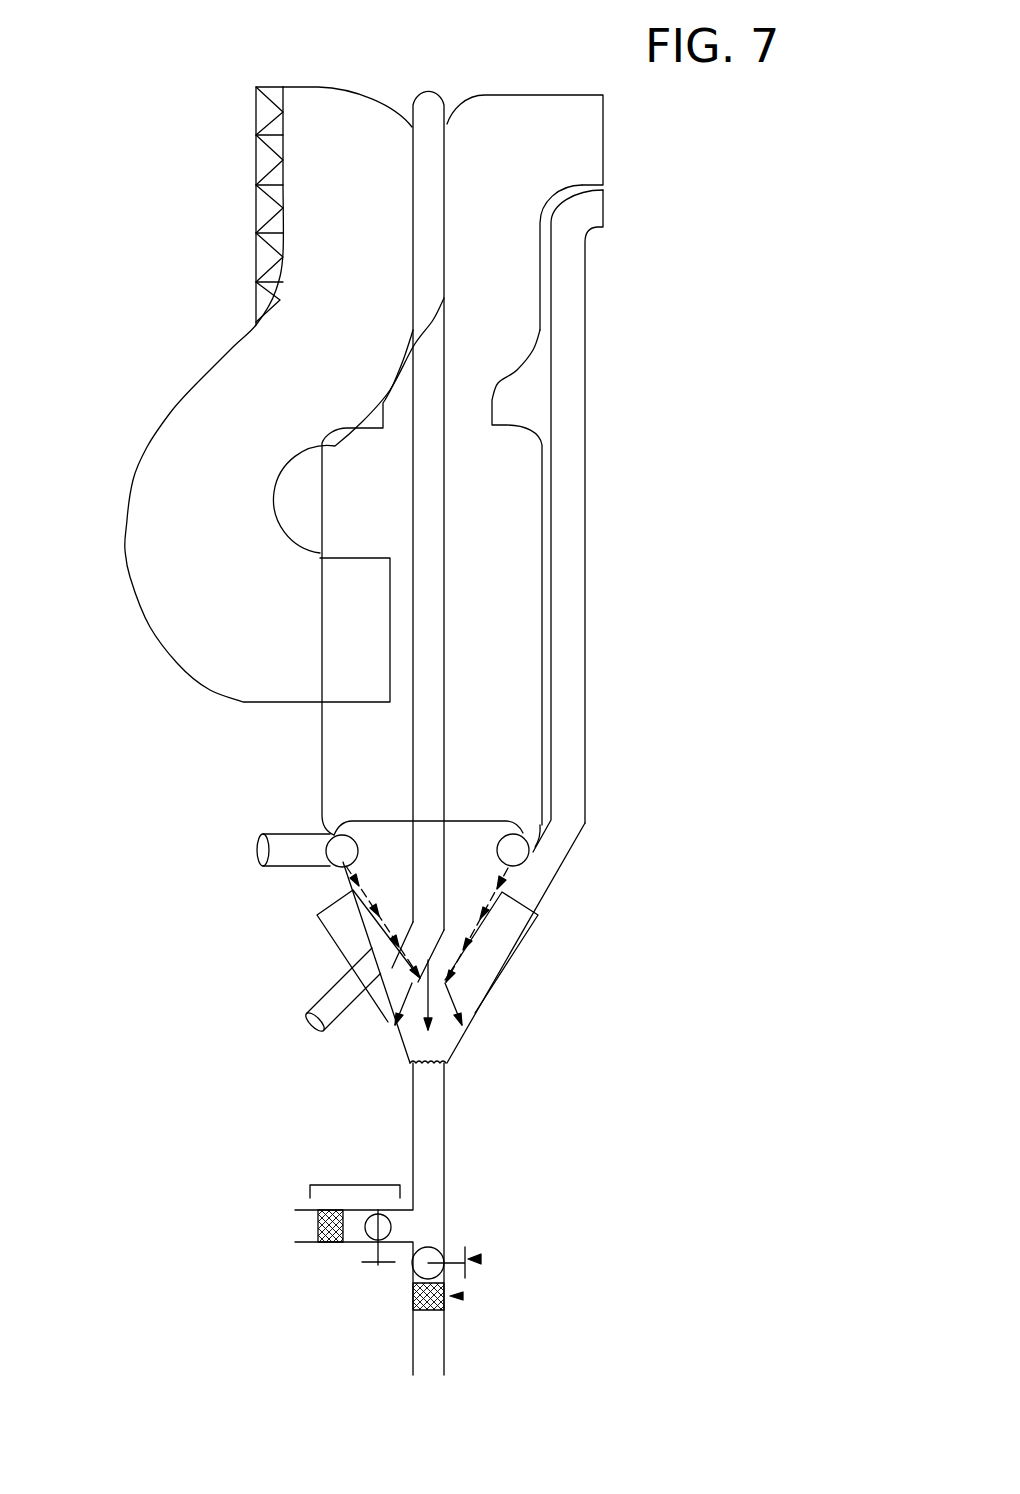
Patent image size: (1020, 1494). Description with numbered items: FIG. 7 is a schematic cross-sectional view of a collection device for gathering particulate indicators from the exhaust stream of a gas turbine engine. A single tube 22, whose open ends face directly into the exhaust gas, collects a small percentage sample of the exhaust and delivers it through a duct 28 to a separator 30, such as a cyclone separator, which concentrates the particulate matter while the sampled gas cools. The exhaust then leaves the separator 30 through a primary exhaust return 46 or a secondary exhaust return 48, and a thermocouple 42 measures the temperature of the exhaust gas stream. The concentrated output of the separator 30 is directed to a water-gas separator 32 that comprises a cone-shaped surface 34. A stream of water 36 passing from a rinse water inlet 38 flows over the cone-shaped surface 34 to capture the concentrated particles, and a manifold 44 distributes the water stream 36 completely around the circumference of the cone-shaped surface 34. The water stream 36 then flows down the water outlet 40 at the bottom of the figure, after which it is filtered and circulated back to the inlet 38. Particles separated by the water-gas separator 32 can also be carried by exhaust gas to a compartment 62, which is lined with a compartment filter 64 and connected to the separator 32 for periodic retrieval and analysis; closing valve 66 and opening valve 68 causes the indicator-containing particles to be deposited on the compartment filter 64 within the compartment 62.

The tube 22 is at (255, 152).
The duct 28 is at (150, 493).
The separator 30 is at (535, 615).
The water-gas separator 32 is at (502, 973).
The cone-shaped surface 34 is at (372, 917).
The stream of water 36 is at (347, 877).
The rinse water inlet 38 is at (260, 852).
The water outlet 40 is at (450, 1140).
The thermocouple 42 is at (433, 84).
The manifold 44 is at (520, 855).
The primary exhaust return 46 is at (603, 139).
The secondary exhaust return 48 is at (603, 210).
The compartment 62 is at (355, 1185).
The compartment filter 64 is at (330, 1242).
The valve 66 is at (470, 1259).
The valve 68 is at (378, 1265).